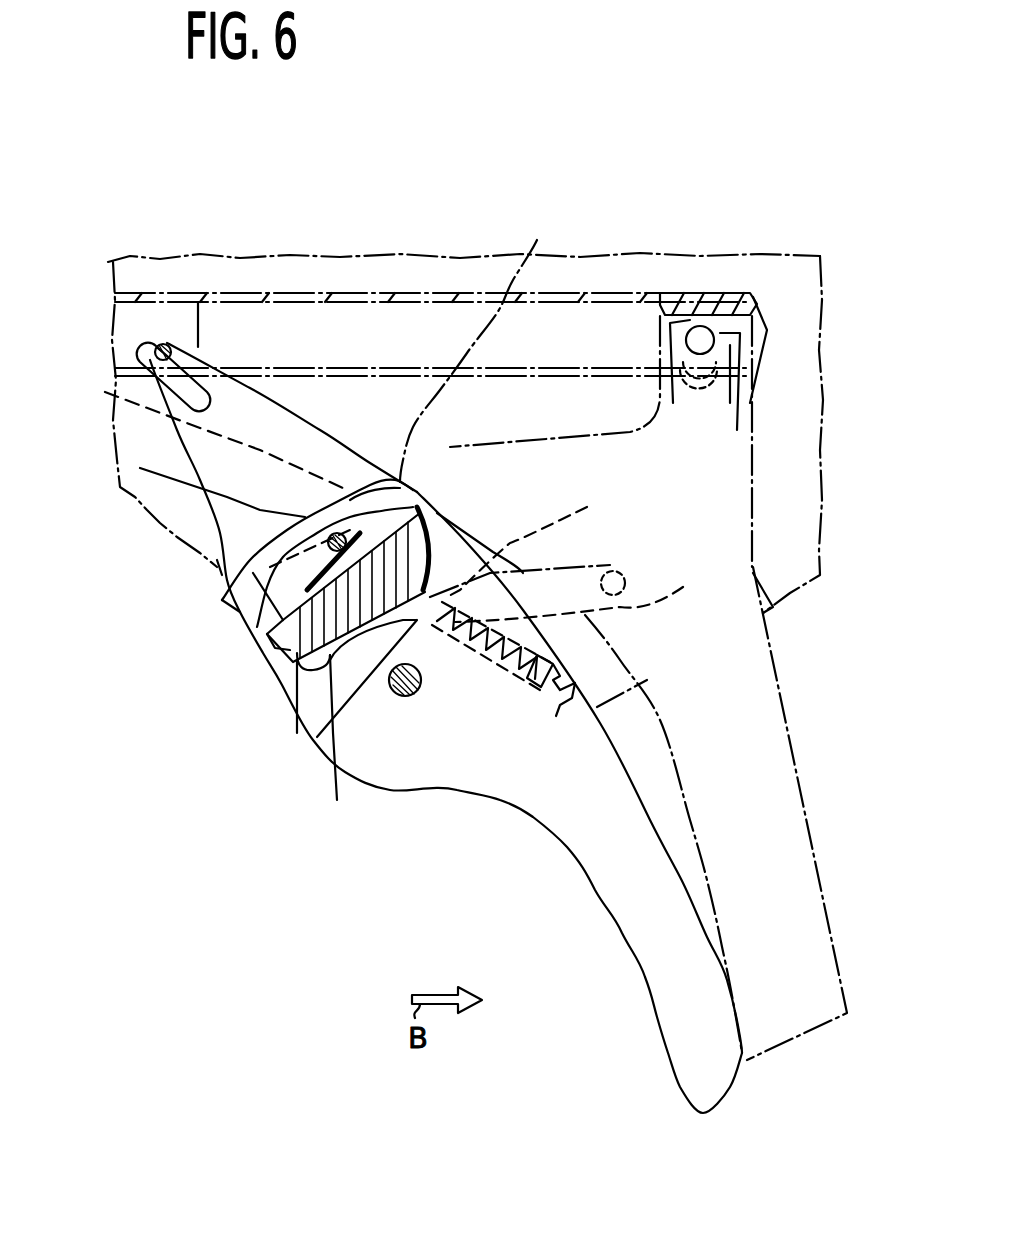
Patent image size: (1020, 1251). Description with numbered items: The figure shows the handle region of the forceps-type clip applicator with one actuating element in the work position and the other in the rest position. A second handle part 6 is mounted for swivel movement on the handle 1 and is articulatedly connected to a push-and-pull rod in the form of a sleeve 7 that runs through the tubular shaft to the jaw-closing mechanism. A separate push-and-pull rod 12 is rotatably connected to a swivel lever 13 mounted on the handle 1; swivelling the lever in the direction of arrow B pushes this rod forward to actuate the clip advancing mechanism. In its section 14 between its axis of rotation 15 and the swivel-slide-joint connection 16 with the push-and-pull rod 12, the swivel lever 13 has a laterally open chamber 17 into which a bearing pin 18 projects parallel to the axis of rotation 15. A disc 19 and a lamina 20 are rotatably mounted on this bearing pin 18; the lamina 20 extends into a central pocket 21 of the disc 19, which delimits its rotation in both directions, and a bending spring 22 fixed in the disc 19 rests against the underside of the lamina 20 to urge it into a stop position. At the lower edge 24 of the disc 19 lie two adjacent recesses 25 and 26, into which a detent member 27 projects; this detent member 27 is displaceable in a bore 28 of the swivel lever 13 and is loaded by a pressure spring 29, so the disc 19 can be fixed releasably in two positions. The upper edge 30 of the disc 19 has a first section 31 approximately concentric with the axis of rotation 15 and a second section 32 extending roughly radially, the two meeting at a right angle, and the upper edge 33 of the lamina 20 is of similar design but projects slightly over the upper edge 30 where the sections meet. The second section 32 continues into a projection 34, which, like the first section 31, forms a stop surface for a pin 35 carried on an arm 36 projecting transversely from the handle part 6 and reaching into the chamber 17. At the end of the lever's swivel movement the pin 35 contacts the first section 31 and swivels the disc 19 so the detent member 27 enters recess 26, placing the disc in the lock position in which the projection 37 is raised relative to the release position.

The handle 1 is at (805, 272).
The second handle part 6 is at (793, 862).
The sleeve 7 is at (345, 300).
The push-and-pull rod 12 is at (190, 313).
The swivel lever 13 is at (453, 803).
The section 14 is at (343, 455).
The axis of rotation 15 is at (393, 683).
The swivel-slide-joint connection 16 is at (160, 345).
The chamber 17 is at (255, 548).
The bearing pin 18 is at (140, 468).
The disc 19 is at (297, 733).
The lamina 20 is at (260, 590).
The central pocket 21 is at (262, 657).
The bending spring 22 is at (432, 532).
The lower edge 24 is at (337, 800).
The recess 25 is at (425, 605).
The recess 26 is at (430, 625).
The detent member 27 is at (526, 588).
The bore 28 is at (600, 570).
The pressure spring 29 is at (588, 591).
The upper edge 30 is at (105, 392).
The first section 31 is at (413, 497).
The second section 32 is at (243, 637).
The upper edge 33 is at (300, 537).
The projection 34 is at (250, 640).
The pin 35 is at (537, 240).
The arm 36 is at (450, 447).
The projection 37 is at (217, 567).